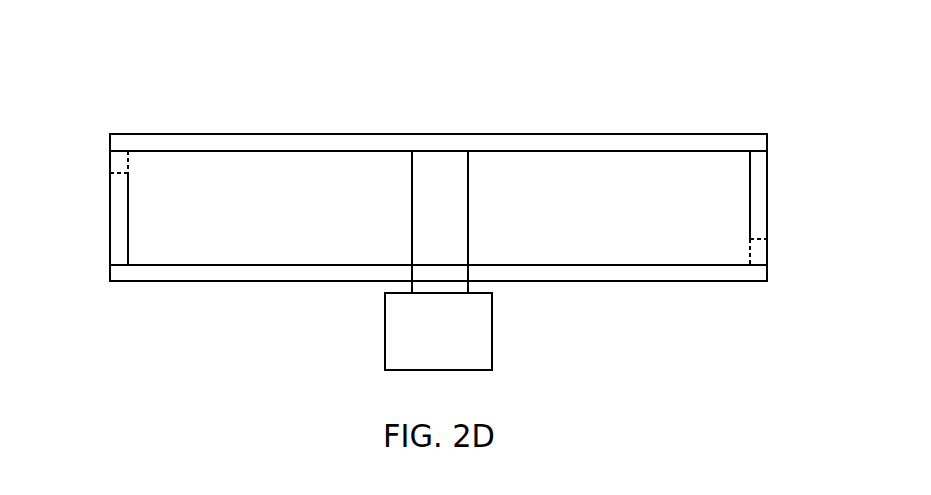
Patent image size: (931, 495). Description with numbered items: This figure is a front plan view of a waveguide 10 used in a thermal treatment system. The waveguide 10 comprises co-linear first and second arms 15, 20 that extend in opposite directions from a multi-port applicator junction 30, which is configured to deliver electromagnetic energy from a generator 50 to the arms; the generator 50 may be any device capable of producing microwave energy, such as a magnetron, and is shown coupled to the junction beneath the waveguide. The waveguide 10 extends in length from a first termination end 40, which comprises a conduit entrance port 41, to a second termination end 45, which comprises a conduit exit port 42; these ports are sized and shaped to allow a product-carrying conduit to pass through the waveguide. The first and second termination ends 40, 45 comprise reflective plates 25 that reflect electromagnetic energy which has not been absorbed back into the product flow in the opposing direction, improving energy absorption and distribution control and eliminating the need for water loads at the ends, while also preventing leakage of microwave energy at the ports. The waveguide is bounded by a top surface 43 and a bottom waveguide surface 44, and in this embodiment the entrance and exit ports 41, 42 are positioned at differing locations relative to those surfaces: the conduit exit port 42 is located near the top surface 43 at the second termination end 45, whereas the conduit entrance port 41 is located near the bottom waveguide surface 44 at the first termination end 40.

The waveguide 10 is at (425, 36).
The first arm 15 is at (577, 209).
The second arm 20 is at (220, 209).
The reflective plates 25 is at (128, 247).
The applicator junction 30 is at (428, 221).
The first termination end 40 is at (753, 213).
The conduit entrance port 41 is at (757, 253).
The conduit exit port 42 is at (120, 161).
The top surface 43 is at (584, 134).
The bottom waveguide surface 44 is at (587, 282).
The second termination end 45 is at (122, 207).
The generator 50 is at (428, 340).